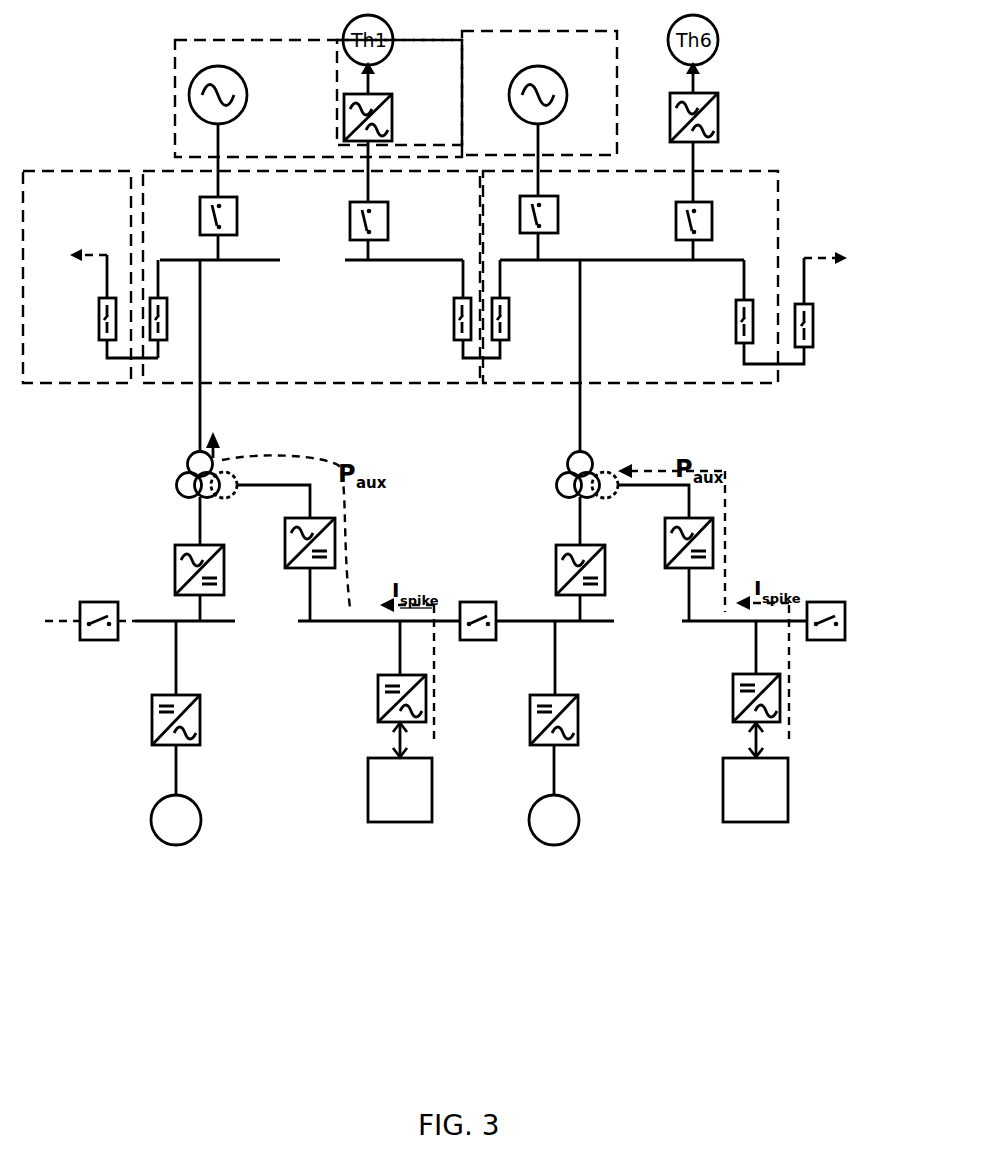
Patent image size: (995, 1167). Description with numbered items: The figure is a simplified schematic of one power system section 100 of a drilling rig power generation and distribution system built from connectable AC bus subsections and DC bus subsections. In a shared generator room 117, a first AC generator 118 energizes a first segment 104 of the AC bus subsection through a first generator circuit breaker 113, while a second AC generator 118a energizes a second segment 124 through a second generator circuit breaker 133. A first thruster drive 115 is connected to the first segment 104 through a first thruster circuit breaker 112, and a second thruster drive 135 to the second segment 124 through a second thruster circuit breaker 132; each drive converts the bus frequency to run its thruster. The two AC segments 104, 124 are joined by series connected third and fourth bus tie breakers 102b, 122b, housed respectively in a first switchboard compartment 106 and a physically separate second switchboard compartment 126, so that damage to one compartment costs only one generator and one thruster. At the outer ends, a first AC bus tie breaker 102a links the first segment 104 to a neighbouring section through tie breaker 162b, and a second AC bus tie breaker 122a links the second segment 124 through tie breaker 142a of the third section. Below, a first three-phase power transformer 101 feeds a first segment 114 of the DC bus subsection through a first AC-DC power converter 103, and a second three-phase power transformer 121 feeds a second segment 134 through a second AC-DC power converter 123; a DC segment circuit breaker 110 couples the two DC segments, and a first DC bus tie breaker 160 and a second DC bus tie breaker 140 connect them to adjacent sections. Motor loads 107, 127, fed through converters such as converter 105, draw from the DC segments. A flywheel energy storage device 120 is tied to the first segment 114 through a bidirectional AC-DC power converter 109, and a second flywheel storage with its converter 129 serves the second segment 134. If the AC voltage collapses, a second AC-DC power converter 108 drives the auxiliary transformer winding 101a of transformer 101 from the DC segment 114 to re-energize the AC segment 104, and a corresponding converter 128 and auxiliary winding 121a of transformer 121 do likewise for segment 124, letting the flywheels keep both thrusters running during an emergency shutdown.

The first power system section 100 is at (176, 898).
The first three-phase power transformer 101 is at (169, 490).
The auxiliary transformer winding 101a is at (264, 477).
The first AC bus tie breaker 102a is at (215, 309).
The third bus tie breaker 102b is at (440, 309).
The first three phase AC-DC power converter 103 is at (223, 570).
The first segment of the AC bus subsection 104 is at (311, 274).
The DC/AC converter 105 is at (199, 683).
The first switchboard compartment 106 is at (311, 299).
The DC bus electrical load 107 is at (193, 812).
The second AC-DC power converter 108 is at (348, 569).
The bidirectional AC-DC power converter 109 is at (360, 671).
The DC segment circuit breaker 110 is at (497, 610).
The first thruster circuit breaker 112 is at (395, 220).
The first generator circuit breaker 113 is at (244, 218).
The first segment of the DC bus subsection 114 is at (297, 632).
The first thruster drive 115 is at (401, 92).
The shared generator room 117 is at (279, 98).
The first AC generator 118 is at (255, 128).
The second AC generator 118a is at (539, 113).
The flywheel energy storage device 120 is at (361, 772).
The second three-phase power transformer 121 is at (550, 490).
The auxiliary transformer winding of the second transformer 121a is at (640, 495).
The second AC bus tie breaker 122a is at (738, 312).
The fourth bus tie breaker 122b is at (539, 300).
The second three phase AC-DC power converter 123 is at (604, 570).
The second segment of the AC bus subsection 124 is at (622, 277).
The second switchboard compartment 126 is at (630, 299).
The DC bus electrical load 127 is at (572, 812).
The auxiliary AC/DC converter 128 is at (729, 569).
The converter of the second energy storage 129 is at (728, 671).
The second thruster circuit breaker 132 is at (720, 220).
The second generator circuit breaker 133 is at (565, 218).
The second segment of the DC bus subsection 134 is at (651, 634).
The second thruster drive 135 is at (729, 117).
The second DC bus tie breaker 140 is at (763, 694).
The tie breaker of the third power system section 142a is at (835, 299).
The first DC bus tie breaker 160 is at (99, 610).
The tie breaker of the second power system section 162b is at (90, 277).